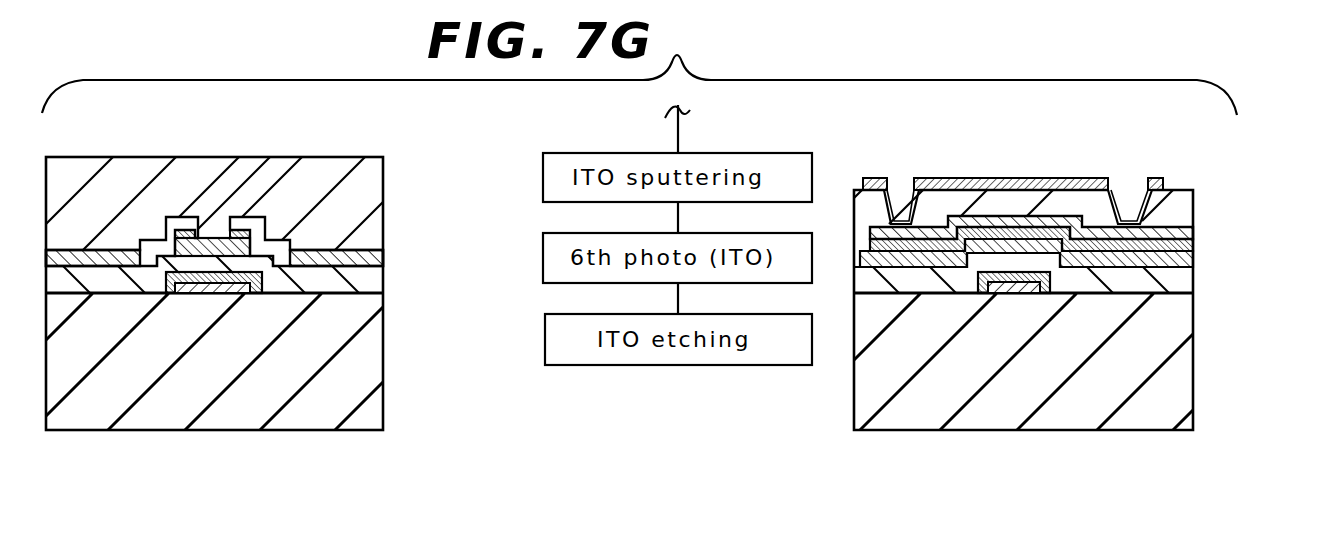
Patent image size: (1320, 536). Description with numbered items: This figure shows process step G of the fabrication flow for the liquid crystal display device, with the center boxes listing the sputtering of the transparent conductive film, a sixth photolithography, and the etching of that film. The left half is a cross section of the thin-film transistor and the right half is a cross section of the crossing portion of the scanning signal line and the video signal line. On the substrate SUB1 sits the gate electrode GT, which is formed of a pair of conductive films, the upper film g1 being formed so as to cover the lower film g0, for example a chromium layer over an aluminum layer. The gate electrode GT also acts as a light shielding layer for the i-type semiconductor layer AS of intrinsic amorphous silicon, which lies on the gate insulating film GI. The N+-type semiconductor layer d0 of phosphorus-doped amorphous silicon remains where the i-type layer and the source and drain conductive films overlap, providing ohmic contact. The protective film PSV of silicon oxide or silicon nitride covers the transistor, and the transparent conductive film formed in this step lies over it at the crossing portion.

The N+-type semiconductor layer d0 is at (208, 229).
The i-type semiconductor layer AS is at (214, 236).
The protective film PSV is at (370, 191).
The gate insulating film GI is at (370, 280).
The substrate SUB1 is at (370, 350).
The lower conductive film of gate electrode g0 is at (235, 293).
The upper conductive film of gate electrode g1 is at (257, 293).
The gate electrode GT is at (615, 336).